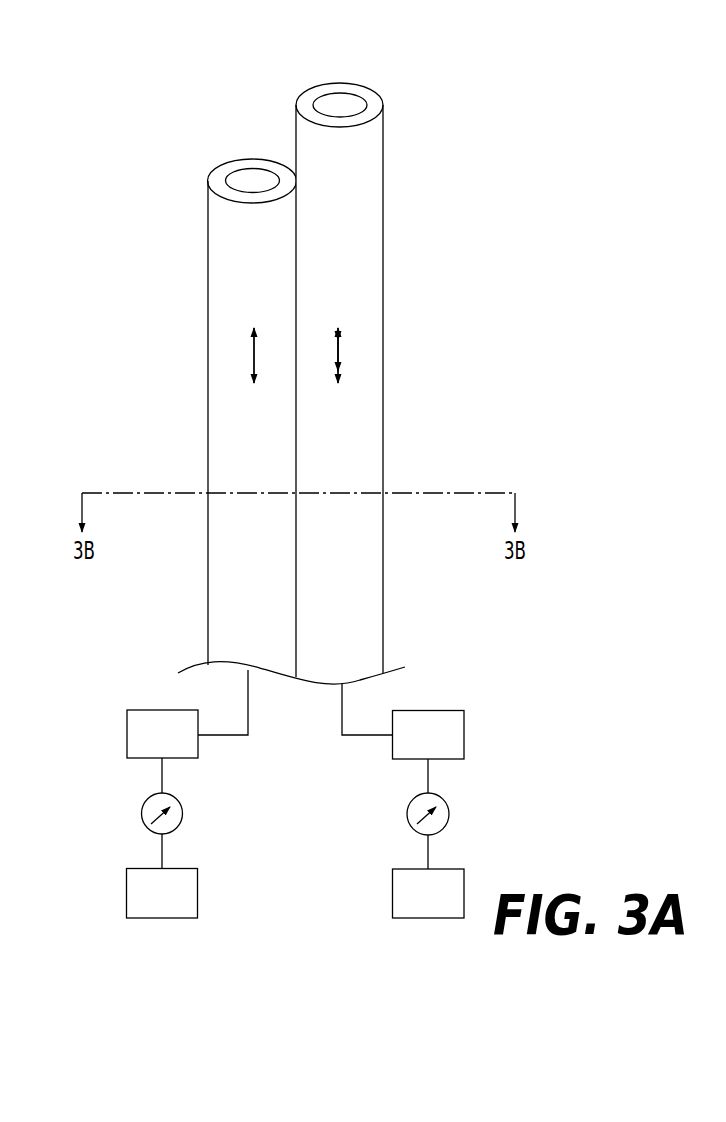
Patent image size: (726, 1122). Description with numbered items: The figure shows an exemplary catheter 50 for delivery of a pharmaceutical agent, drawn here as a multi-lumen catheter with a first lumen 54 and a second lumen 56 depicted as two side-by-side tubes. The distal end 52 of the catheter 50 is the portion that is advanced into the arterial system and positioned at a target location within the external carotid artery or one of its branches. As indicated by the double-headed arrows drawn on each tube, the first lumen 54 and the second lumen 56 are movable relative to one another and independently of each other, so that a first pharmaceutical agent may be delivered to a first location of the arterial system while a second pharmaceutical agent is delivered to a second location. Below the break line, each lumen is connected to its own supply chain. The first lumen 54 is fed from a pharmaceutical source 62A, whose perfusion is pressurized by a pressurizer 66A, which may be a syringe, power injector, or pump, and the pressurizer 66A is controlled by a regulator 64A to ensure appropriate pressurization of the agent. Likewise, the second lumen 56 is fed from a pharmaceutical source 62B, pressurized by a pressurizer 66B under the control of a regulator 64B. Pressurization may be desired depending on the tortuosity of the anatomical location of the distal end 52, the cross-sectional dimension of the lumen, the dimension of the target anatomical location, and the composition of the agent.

The catheter 50 is at (336, 349).
The distal end 52 is at (290, 88).
The first lumen 54 is at (343, 100).
The second lumen 56 is at (252, 173).
The pharmaceutical source 62A is at (446, 746).
The pharmaceutical source 62B is at (180, 746).
The regulator 64A is at (449, 815).
The regulator 64B is at (183, 815).
The pressurizer 66A is at (446, 905).
The pressurizer 66B is at (180, 905).